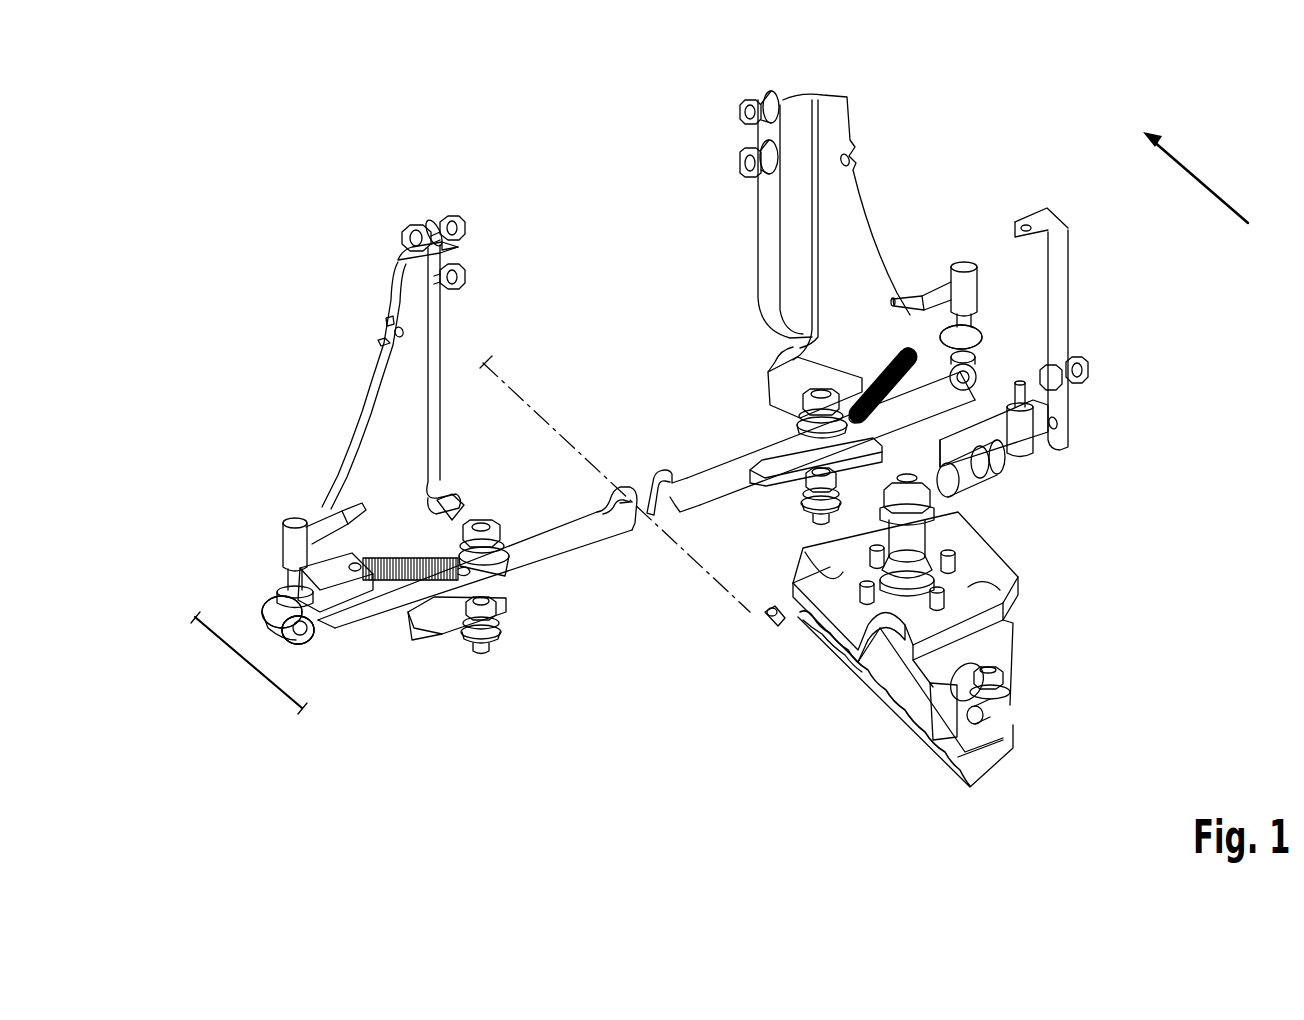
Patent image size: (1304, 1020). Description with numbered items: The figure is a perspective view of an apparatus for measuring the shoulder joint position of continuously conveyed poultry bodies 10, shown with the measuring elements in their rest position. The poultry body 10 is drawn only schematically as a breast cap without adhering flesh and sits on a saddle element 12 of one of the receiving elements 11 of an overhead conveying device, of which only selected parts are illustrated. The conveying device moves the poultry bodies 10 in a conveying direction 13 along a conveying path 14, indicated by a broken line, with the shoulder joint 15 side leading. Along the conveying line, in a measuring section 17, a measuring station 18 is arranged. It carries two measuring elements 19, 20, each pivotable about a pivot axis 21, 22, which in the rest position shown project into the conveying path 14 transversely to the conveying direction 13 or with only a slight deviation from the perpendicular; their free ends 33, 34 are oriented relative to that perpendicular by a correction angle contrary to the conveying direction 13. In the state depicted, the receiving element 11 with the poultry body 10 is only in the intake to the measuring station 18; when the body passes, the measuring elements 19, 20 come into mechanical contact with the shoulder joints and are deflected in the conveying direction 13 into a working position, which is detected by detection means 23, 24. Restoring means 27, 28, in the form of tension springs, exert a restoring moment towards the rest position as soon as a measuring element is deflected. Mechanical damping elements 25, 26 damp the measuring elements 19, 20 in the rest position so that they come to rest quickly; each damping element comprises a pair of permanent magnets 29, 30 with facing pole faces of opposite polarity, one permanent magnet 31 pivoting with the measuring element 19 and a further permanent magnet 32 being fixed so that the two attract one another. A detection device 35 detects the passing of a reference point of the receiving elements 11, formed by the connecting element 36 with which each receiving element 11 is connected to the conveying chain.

The poultry body 10 is at (805, 652).
The receiving element 11 is at (1065, 655).
The saddle element 12 is at (893, 677).
The conveying direction 13 is at (1208, 184).
The conveying path 14 is at (492, 360).
The shoulder joint 15 is at (765, 615).
The measuring section 17 is at (238, 660).
The measuring station 18 is at (335, 417).
The measuring element 19 is at (581, 540).
The measuring element 20 is at (733, 467).
The pivot axis 21 is at (481, 522).
The pivot axis 22 is at (822, 390).
The detection means 23 is at (290, 545).
The detection means 24 is at (964, 297).
The damping element 25 is at (318, 660).
The damping element 26 is at (1008, 355).
The restoring means 27 is at (399, 558).
The restoring means 28 is at (863, 403).
The pair of permanent magnets 29 is at (232, 610).
The pair of permanent magnets 30 is at (1003, 340).
The permanent magnet 31 is at (302, 628).
The permanent magnet 32 is at (268, 606).
The free end 33 is at (620, 503).
The free end 34 is at (670, 497).
The detection device 35 is at (1044, 492).
The connecting element 36 is at (913, 533).